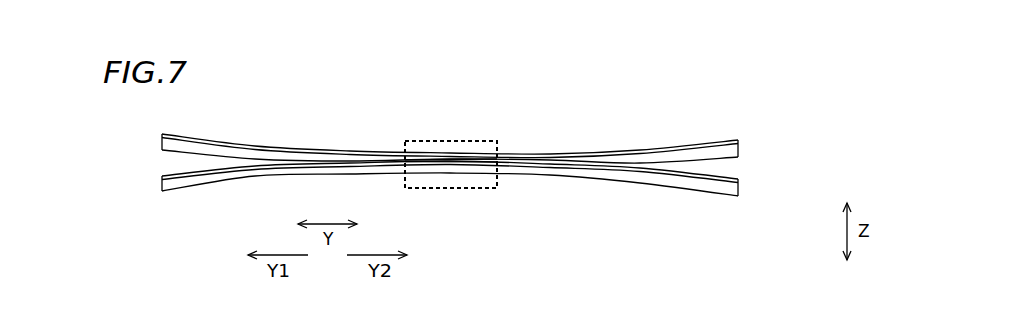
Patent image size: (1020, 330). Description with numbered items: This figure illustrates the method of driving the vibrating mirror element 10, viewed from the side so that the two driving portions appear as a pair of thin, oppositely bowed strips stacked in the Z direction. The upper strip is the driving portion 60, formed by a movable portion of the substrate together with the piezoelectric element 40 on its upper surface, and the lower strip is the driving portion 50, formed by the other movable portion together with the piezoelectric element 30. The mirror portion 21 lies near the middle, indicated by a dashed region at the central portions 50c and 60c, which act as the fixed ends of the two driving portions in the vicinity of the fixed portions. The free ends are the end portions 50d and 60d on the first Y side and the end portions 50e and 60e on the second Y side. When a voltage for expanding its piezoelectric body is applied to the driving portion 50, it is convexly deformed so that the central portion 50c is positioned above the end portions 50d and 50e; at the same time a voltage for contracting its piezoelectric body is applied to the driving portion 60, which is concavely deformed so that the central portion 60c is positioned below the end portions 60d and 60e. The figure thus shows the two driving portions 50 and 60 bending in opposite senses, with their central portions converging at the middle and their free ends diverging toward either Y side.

The vibrating mirror element 10 is at (820, 112).
The mirror portion 21 is at (407, 142).
The piezoelectric element 30 is at (248, 165).
The piezoelectric element 40 is at (203, 138).
The driving portion 50 is at (452, 157).
The driving portion 60 is at (452, 153).
The central portion 50c is at (447, 166).
The central portion 60c is at (447, 157).
The end portion 50d is at (162, 184).
The end portion 60d is at (162, 142).
The end portion 50e is at (740, 189).
The end portion 60e is at (740, 147).